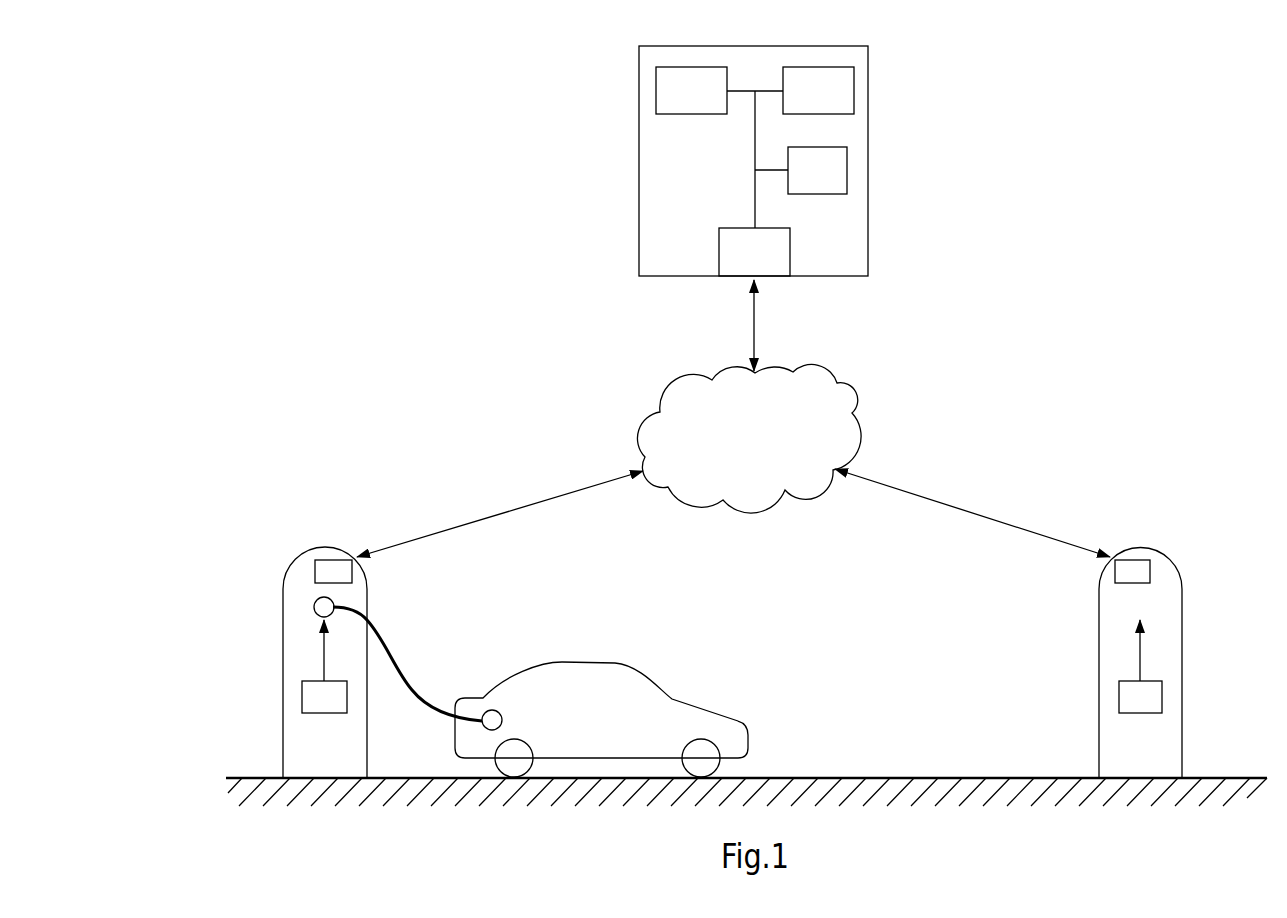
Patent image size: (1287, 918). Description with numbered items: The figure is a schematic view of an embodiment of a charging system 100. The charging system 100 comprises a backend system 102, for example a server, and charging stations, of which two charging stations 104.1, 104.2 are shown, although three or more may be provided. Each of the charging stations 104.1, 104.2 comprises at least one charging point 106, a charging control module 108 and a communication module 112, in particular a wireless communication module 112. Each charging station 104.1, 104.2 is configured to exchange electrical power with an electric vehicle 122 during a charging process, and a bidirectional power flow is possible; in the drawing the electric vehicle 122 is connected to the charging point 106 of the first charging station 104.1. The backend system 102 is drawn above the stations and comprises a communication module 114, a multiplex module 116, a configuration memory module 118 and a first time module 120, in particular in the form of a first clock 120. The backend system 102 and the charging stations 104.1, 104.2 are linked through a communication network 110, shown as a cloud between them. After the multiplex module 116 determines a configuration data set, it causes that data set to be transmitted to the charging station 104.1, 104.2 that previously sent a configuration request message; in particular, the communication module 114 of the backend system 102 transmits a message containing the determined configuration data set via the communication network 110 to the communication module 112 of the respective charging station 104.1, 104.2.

The charging system 100 is at (1199, 115).
The backend system 102 is at (639, 162).
The first charging station 104.1 is at (283, 657).
The second charging station 104.2 is at (1182, 657).
The charging point 106 is at (314, 607).
The charging control module 108 is at (302, 698).
The communication network 110 is at (737, 447).
The communication module 112 is at (315, 572).
The communication module 114 is at (773, 264).
The multiplex module 116 is at (710, 104).
The configuration memory module 118 is at (836, 104).
The first time module 120 is at (836, 184).
The electric vehicle 122 is at (585, 660).